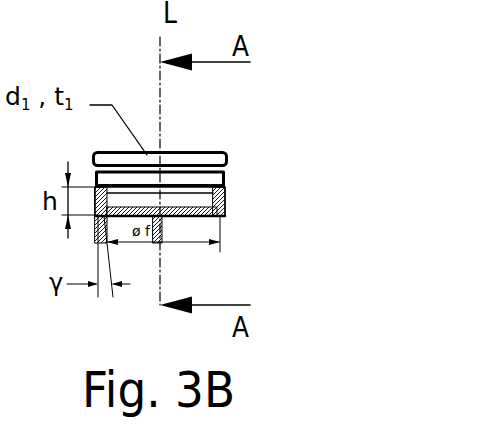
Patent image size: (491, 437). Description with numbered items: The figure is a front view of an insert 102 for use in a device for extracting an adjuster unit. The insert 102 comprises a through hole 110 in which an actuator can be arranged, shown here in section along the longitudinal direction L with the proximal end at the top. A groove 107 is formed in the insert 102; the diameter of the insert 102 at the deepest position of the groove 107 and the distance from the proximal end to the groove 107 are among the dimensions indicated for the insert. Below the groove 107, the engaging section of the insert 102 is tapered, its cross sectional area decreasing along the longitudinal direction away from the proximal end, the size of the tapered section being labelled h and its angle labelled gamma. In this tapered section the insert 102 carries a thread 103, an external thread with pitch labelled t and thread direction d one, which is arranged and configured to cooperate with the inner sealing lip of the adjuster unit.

The insert 102 is at (259, 105).
The through hole 110 is at (172, 150).
The groove 107 is at (233, 172).
The thread 103 is at (233, 205).